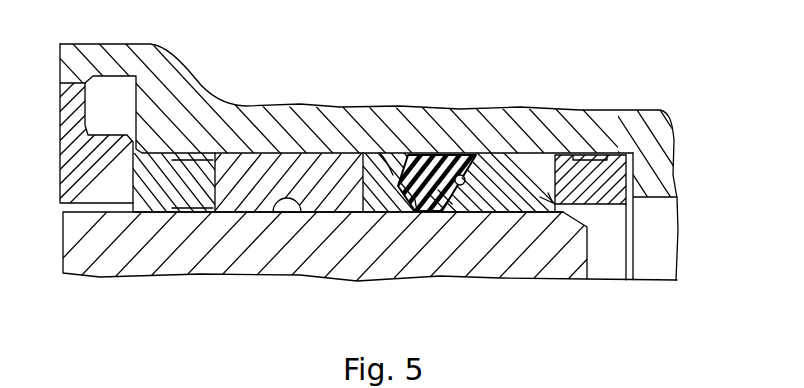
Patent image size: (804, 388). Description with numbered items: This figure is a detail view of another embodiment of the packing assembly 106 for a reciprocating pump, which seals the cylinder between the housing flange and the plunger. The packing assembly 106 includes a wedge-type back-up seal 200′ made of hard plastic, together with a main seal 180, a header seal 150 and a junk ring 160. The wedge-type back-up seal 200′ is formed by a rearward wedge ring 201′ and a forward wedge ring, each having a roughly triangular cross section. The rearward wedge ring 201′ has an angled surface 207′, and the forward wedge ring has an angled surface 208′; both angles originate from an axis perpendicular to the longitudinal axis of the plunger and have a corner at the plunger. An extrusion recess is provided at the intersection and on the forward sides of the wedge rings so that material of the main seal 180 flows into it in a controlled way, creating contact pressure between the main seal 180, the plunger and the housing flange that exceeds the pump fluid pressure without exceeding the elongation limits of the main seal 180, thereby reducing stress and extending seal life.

The packing assembly 106 is at (483, 132).
The header seal 150 is at (513, 183).
The junk ring 160 is at (618, 175).
The wedge-type back-up seal 200′ is at (410, 177).
The rearward wedge ring 201′ is at (365, 185).
The angled surface 207′ is at (427, 173).
The angled surface 208′ is at (403, 175).
The main seal 180 is at (437, 188).